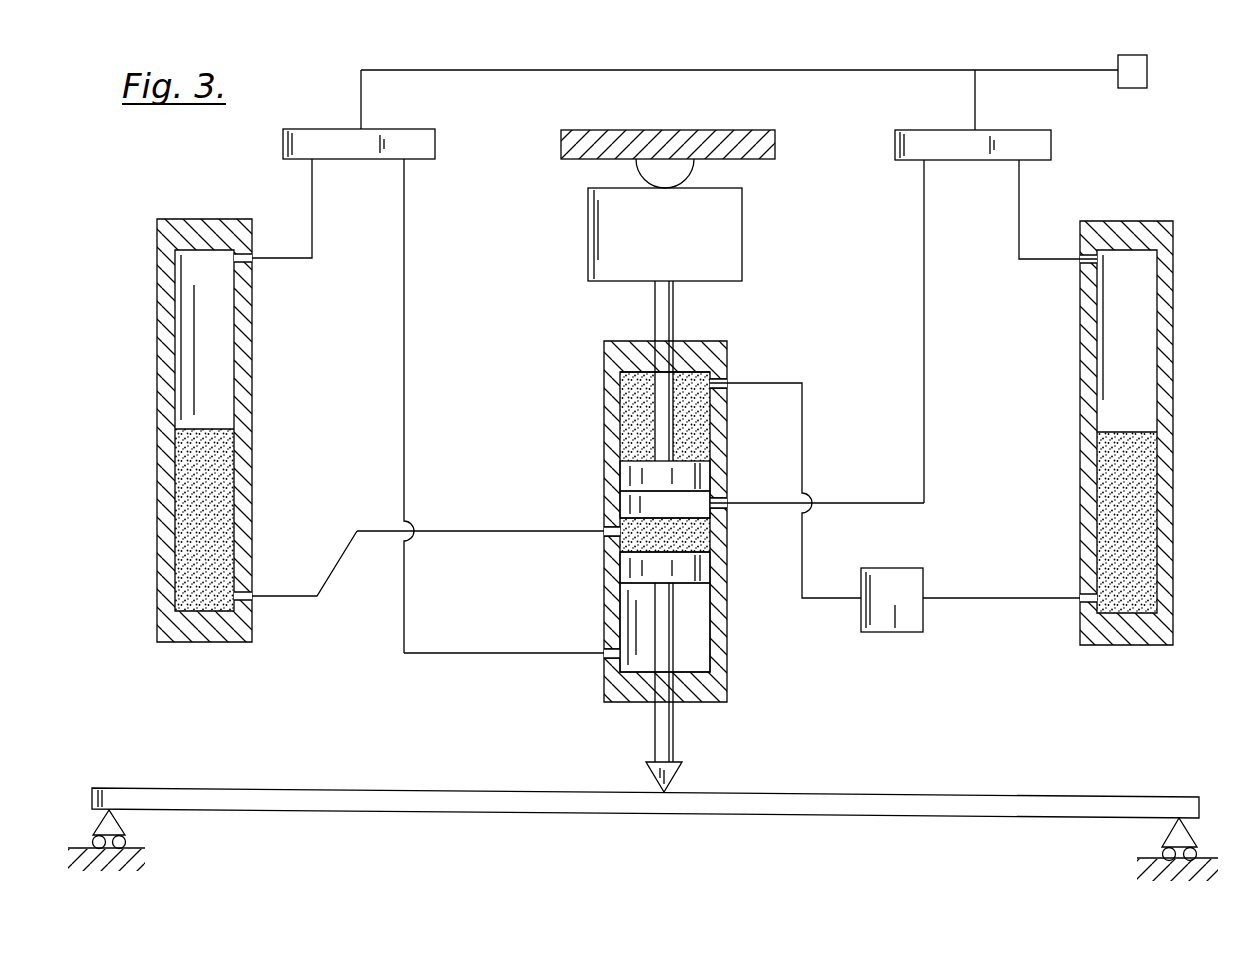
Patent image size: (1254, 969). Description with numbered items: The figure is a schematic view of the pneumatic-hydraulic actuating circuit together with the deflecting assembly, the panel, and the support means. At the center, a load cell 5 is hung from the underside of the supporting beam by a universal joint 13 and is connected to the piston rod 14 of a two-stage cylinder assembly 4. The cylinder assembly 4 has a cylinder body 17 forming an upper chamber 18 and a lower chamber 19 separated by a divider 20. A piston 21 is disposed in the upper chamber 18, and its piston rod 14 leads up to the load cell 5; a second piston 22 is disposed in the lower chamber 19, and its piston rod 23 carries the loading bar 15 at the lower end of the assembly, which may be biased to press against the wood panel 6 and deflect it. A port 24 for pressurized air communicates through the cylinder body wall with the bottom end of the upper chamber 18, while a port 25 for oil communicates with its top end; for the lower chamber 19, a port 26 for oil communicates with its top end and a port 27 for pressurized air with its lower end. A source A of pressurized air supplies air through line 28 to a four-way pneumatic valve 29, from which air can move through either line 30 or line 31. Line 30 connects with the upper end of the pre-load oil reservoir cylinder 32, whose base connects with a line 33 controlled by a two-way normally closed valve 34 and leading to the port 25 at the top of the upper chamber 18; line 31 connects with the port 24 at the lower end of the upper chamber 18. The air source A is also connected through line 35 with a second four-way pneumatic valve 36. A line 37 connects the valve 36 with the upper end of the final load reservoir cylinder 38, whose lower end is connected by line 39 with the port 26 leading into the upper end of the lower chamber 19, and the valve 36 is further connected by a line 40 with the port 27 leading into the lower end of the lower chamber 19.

The two-stage cylinder assembly 4 is at (584, 435).
The load cell 5 is at (742, 236).
The wood panel 6 is at (880, 794).
The universal joint 13 is at (688, 172).
The piston rod 14 is at (673, 318).
The loading bar 15 is at (676, 779).
The cylinder body 17 is at (725, 352).
The upper chamber 18 is at (700, 426).
The lower chamber 19 is at (692, 632).
The divider 20 is at (686, 516).
The piston 21 is at (622, 473).
The second piston 22 is at (626, 567).
The piston rod 23 is at (673, 734).
The port 24 is at (718, 505).
The port 25 is at (727, 387).
The port 26 is at (604, 530).
The port 27 is at (600, 657).
The line 28 is at (1060, 70).
The 4-way pneumatic valve 29 is at (1005, 138).
The line 30 is at (1019, 248).
The line 31 is at (924, 250).
The pre-load oil reservoir cylinder 32 is at (1178, 360).
The line 33 is at (1023, 598).
The 2-way normally closed valve 34 is at (900, 580).
The line 35 is at (362, 96).
The 4-way pneumatic valve 36 is at (342, 152).
The line 37 is at (313, 230).
The final load reservoir cylinder 38 is at (156, 376).
The line 39 is at (336, 562).
The line 40 is at (405, 330).
The source of pressurized air A is at (1138, 56).